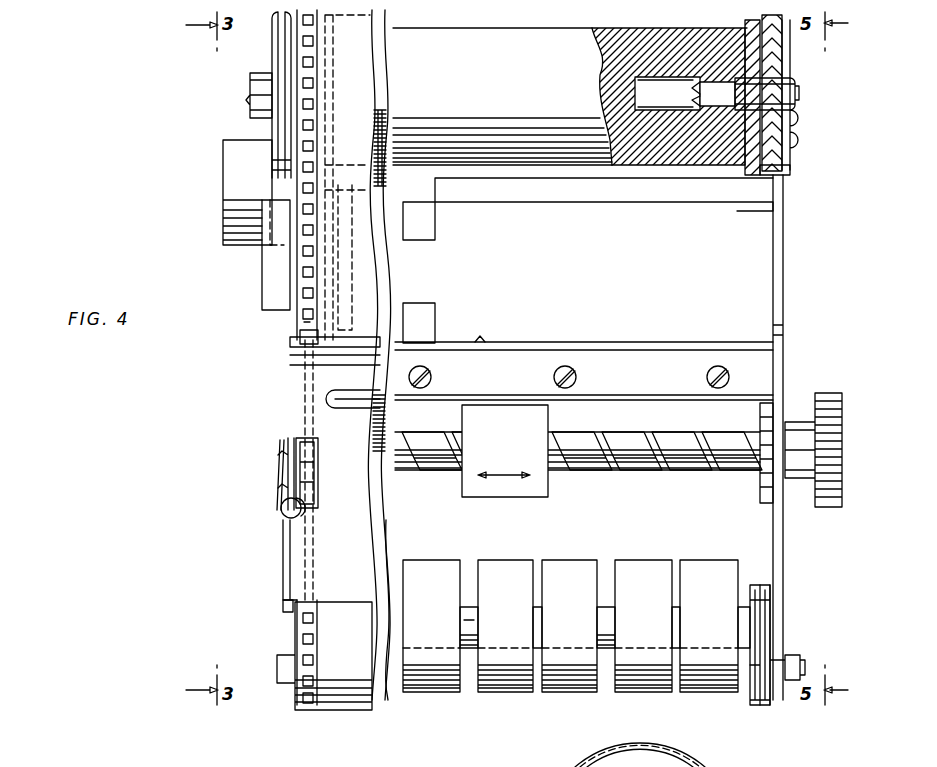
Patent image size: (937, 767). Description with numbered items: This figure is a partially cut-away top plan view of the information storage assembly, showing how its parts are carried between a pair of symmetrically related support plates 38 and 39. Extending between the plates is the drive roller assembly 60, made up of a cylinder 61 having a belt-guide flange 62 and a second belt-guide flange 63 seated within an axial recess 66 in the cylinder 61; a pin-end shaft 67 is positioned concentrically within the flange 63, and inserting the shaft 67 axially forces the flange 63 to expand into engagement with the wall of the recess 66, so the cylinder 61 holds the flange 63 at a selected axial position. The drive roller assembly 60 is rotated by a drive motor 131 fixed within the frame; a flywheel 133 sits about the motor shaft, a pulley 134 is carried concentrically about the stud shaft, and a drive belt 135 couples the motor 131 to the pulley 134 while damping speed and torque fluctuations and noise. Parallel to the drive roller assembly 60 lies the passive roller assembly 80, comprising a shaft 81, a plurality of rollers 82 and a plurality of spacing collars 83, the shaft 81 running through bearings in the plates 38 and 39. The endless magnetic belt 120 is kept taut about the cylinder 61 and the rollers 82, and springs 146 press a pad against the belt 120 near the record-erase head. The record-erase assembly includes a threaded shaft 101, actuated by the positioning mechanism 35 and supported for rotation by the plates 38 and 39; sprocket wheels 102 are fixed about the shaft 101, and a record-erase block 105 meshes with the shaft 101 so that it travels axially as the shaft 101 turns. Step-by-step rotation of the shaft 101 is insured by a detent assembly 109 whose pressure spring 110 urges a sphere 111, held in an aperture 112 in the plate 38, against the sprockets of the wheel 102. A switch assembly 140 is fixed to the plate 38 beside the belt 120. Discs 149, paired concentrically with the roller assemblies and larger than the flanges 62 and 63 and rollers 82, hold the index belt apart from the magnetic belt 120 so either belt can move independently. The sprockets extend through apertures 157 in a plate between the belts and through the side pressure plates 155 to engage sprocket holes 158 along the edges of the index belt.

The positioning mechanism 35 is at (828, 507).
The support plate 38 is at (292, 578).
The support plate 39 is at (781, 623).
The drive roller assembly 60 is at (450, 25).
The cylinder 61 is at (497, 162).
The belt-guide flange 62 is at (362, 16).
The belt-guide flange 63 is at (790, 170).
The axial recess 66 is at (667, 107).
The pin-end shaft 67 is at (785, 84).
The passive roller assembly 80 is at (576, 656).
The shaft 81 is at (470, 620).
The rollers 82 is at (445, 690).
The spacing collars 83 is at (477, 648).
The threaded shaft 101 is at (633, 435).
The sprocket wheels 102 is at (762, 484).
The record-erase block 105 is at (515, 406).
The detent assembly 109 is at (275, 470).
The pressure spring 110 is at (290, 503).
The sphere 111 is at (283, 514).
The aperture 112 is at (297, 516).
The magnetic belt 120 is at (389, 548).
The drive motor 131 is at (400, 292).
The flywheel 133 is at (223, 190).
The pulley 134 is at (272, 126).
The drive belt 135 is at (280, 40).
The switch assembly 140 is at (262, 268).
The springs 146 is at (290, 625).
The discs 149 is at (783, 32).
The side pressure plates 155 is at (385, 514).
The apertures 157 is at (302, 452).
The sprocket holes 158 is at (305, 320).